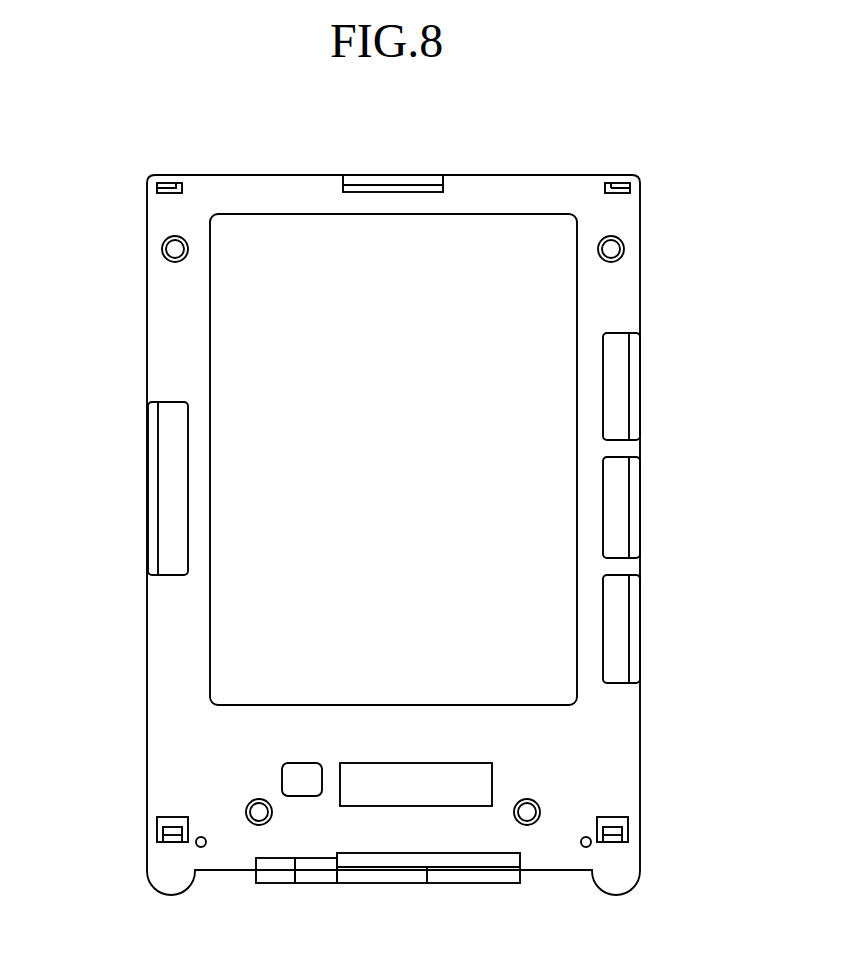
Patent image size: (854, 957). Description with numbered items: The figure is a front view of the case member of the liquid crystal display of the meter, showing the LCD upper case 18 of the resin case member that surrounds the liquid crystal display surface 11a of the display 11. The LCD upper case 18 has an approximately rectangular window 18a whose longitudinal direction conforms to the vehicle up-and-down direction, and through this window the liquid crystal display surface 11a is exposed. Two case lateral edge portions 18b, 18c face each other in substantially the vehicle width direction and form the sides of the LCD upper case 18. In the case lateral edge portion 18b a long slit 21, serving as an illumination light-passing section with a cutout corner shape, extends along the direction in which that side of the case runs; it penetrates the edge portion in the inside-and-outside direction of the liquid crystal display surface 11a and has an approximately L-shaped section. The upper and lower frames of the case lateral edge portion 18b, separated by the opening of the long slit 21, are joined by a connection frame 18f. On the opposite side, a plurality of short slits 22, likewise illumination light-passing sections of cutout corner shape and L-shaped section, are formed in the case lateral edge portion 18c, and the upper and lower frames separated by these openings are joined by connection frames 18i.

The electronic device 11 is at (396, 491).
The liquid crystal display surface 11a is at (520, 250).
The LCD upper case 18 is at (636, 217).
The window 18a is at (484, 221).
The case lateral edge portion 18b is at (144, 438).
The case lateral edge portion 18c is at (646, 352).
The connection frame 18f is at (197, 482).
The connection frames 18i is at (588, 387).
The long slit 21 is at (144, 482).
The short slit 22 is at (646, 384).